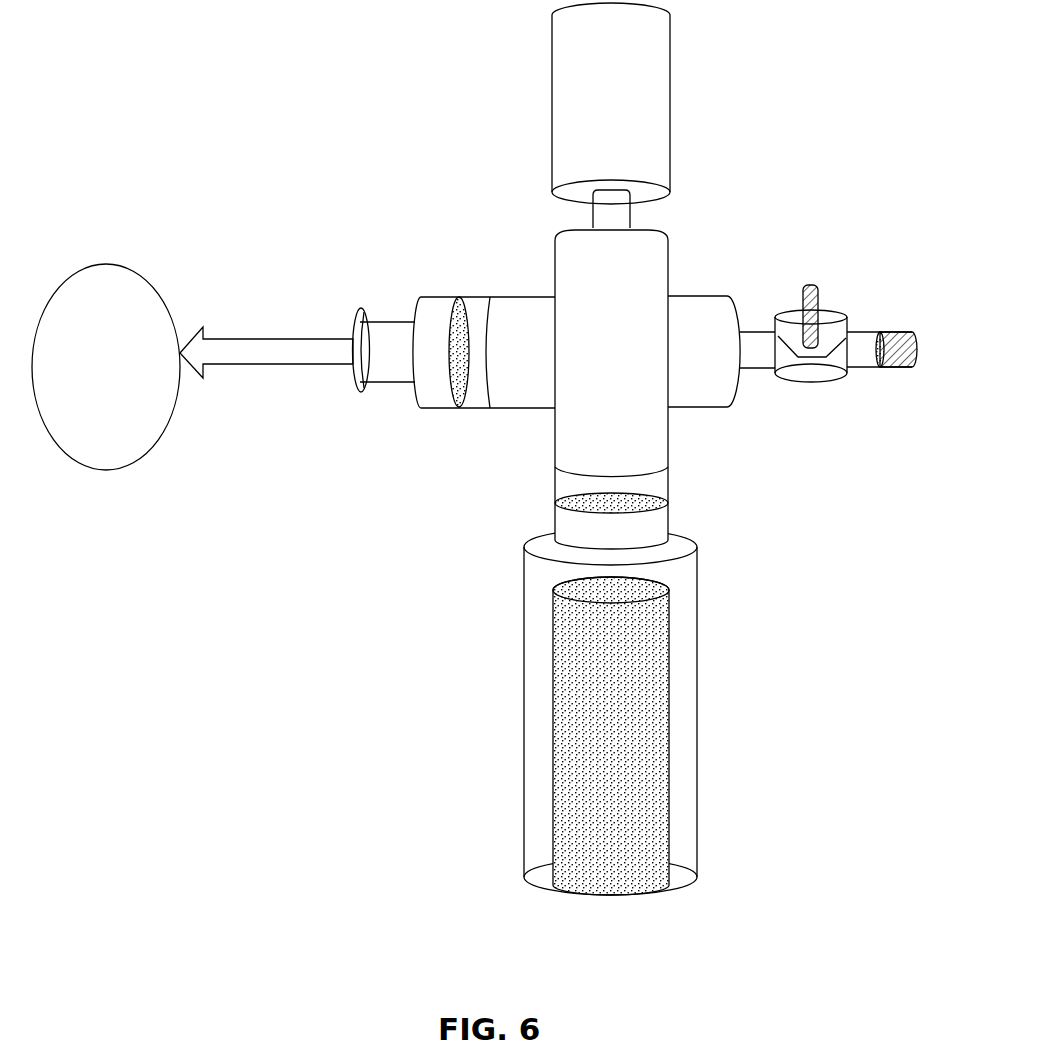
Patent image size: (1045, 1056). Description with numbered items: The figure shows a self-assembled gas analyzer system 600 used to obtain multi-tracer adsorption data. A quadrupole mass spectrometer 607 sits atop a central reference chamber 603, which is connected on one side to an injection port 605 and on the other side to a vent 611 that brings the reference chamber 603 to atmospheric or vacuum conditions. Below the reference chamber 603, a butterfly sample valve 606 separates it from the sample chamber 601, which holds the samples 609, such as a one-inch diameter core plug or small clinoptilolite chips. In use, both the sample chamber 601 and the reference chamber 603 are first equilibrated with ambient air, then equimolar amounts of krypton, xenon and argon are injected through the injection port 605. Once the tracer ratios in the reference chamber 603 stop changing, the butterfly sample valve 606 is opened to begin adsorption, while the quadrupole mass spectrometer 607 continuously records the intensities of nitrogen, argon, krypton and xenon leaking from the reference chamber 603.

The self-assembled gas analyzer system 600 is at (263, 106).
The sample chamber 601 is at (683, 632).
The reference chamber 603 is at (652, 273).
The injection port 605 is at (852, 272).
The butterfly sample valve 606 is at (653, 498).
The quadrupole mass spectrometer 607 is at (655, 92).
The samples 609 is at (663, 700).
The vent 611 is at (452, 310).